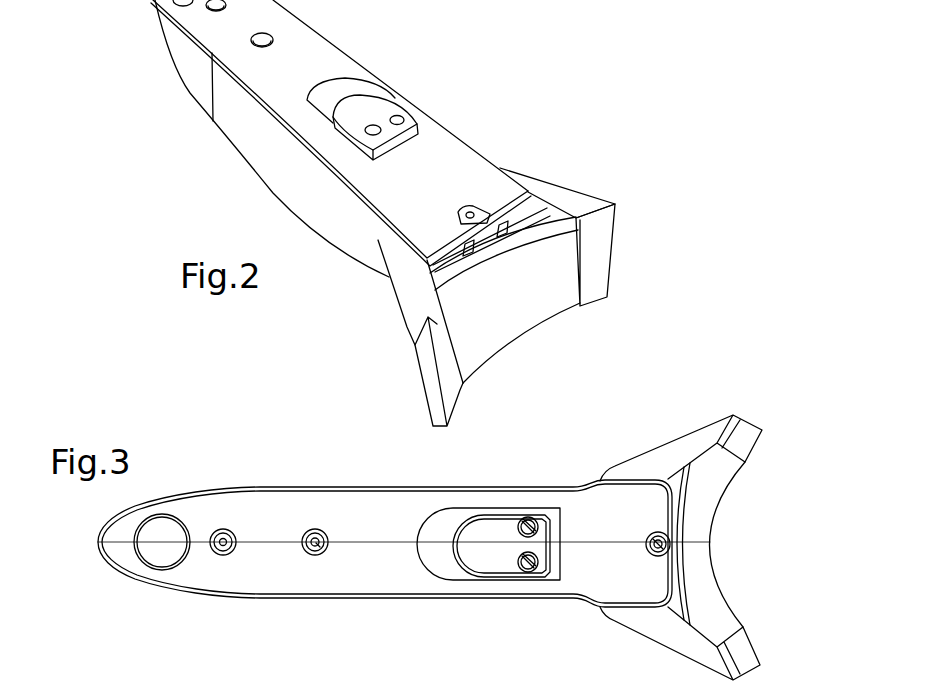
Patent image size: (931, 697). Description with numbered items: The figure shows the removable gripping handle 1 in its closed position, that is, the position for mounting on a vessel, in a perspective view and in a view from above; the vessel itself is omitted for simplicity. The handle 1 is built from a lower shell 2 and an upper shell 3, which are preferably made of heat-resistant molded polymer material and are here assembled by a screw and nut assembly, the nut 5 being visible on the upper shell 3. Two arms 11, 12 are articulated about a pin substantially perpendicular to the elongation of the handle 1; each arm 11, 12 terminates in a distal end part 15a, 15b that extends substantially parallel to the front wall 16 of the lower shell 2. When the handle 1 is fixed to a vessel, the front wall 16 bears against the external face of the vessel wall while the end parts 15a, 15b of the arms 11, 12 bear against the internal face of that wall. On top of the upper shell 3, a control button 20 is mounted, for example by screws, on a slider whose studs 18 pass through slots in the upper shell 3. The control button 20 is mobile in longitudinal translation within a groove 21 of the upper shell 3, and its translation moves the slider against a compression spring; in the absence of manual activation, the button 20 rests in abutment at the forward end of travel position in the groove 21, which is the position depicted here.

In FIG. 2, the handle 1 is at (536, 99).
In FIG. 2, the lower shell 2 is at (247, 140).
In FIG. 2, the upper shell 3 is at (307, 28).
In FIG. 3, the upper shell 3 is at (263, 502).
In FIG. 3, the nut 5 is at (327, 557).
In FIG. 2, the arm 11 is at (562, 190).
In FIG. 2, the arm 12 is at (407, 292).
In FIG. 2, the distal end part 15a is at (603, 243).
In FIG. 3, the distal end part 15a is at (753, 428).
In FIG. 2, the distal end part 15b is at (440, 367).
In FIG. 3, the distal end part 15b is at (747, 647).
In FIG. 2, the front wall 16 is at (530, 313).
In FIG. 3, the front wall 16 is at (704, 522).
In FIG. 3, the stud 18 is at (537, 519).
In FIG. 2, the control button 20 is at (380, 107).
In FIG. 3, the control button 20 is at (503, 571).
In FIG. 2, the groove 21 is at (350, 77).
In FIG. 3, the groove 21 is at (423, 573).